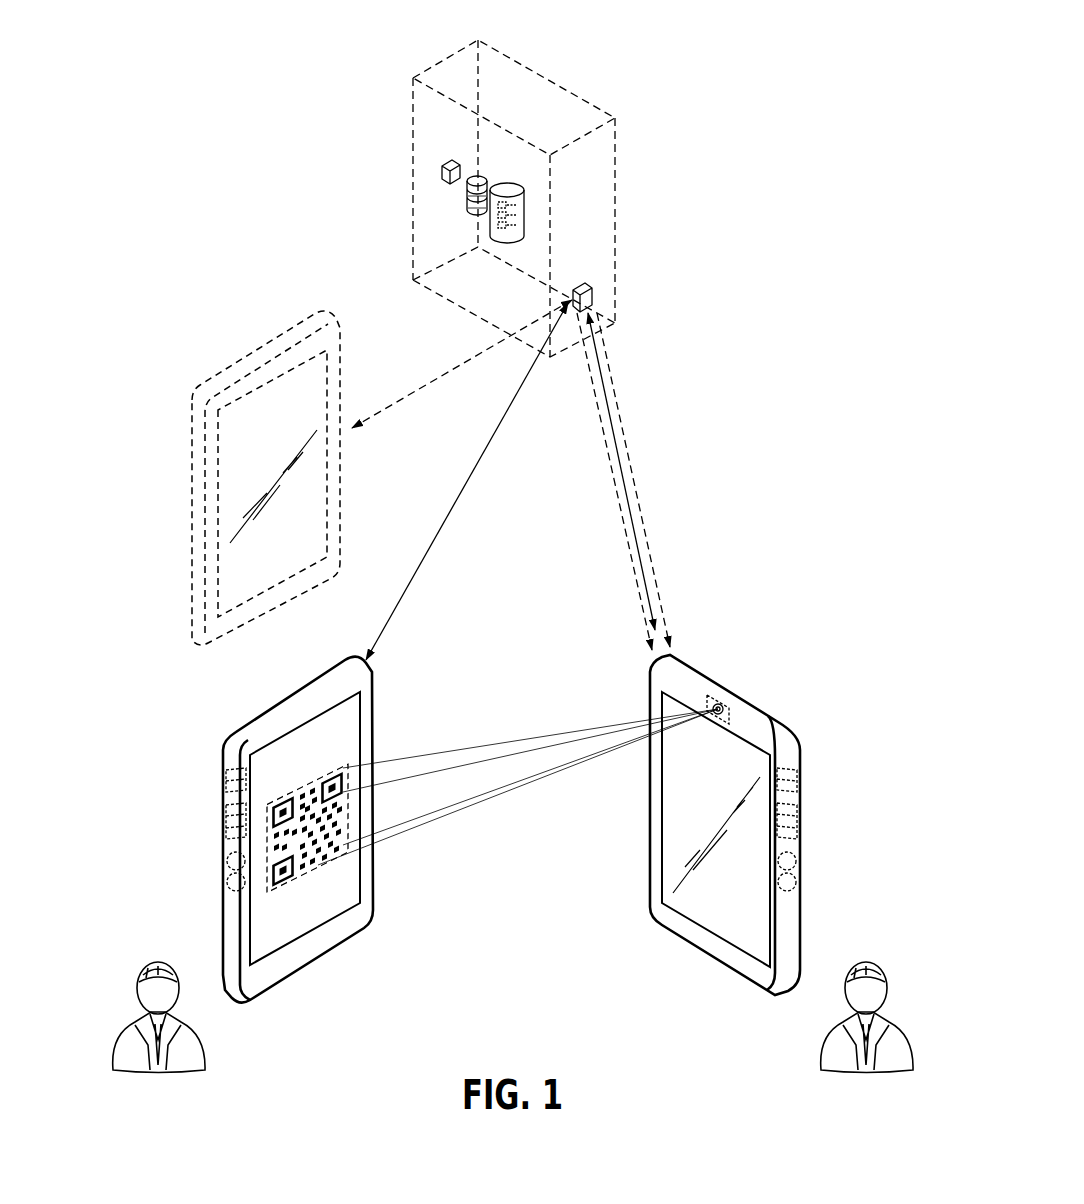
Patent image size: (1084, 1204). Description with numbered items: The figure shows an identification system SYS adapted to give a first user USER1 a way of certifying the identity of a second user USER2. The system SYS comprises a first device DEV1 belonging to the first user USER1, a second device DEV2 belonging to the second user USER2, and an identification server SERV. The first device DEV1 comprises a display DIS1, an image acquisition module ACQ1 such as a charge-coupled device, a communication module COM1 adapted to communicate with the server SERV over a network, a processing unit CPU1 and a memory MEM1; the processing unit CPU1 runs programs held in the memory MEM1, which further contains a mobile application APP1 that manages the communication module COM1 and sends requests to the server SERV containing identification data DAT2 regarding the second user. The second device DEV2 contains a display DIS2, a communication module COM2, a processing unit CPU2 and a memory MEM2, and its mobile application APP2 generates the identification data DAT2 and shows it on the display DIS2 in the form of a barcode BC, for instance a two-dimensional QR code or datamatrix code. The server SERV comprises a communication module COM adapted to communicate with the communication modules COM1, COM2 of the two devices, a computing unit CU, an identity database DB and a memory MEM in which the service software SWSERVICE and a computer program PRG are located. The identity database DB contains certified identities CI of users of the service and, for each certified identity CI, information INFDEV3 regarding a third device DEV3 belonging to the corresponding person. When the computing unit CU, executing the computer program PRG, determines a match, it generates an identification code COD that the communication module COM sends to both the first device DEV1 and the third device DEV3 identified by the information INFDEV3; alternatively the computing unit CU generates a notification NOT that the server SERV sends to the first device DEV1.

The identification system SYS is at (797, 343).
The identification server SERV is at (577, 73).
The computing unit CU is at (441, 172).
The computer program PRG is at (465, 193).
The service software SWSERVICE is at (467, 203).
The memory MEM is at (470, 216).
The certified identity CI is at (525, 208).
The identity database DB is at (524, 217).
The device information INFDEV3 is at (524, 224).
The communication module COM is at (593, 296).
The identification code COD is at (432, 383).
The notification NOT is at (634, 472).
The third device DEV3 is at (252, 338).
The second device DEV2 is at (321, 970).
The communication module COM2 is at (222, 775).
The processing unit CPU2 is at (222, 817).
The mobile application APP2 is at (242, 867).
The memory MEM2 is at (226, 886).
The display DIS2 is at (343, 873).
The identification data DAT2 is at (302, 776).
The barcode BC is at (351, 756).
The first device DEV1 is at (707, 969).
The communication module COM1 is at (802, 774).
The processing unit CPU1 is at (802, 815).
The mobile application APP1 is at (797, 867).
The memory MEM1 is at (798, 887).
The display DIS1 is at (678, 817).
The image acquisition module ACQ1 is at (728, 690).
The first user USER1 is at (856, 1083).
The second user USER2 is at (164, 1083).